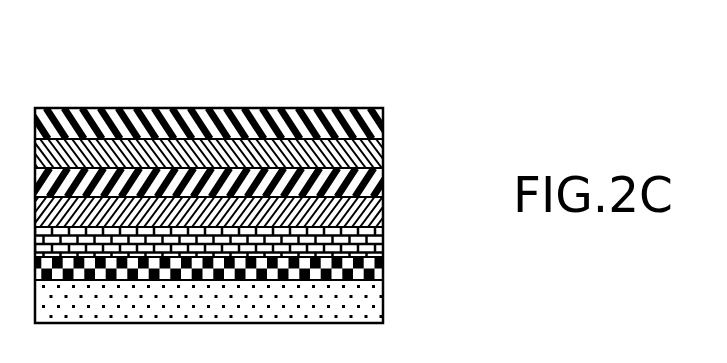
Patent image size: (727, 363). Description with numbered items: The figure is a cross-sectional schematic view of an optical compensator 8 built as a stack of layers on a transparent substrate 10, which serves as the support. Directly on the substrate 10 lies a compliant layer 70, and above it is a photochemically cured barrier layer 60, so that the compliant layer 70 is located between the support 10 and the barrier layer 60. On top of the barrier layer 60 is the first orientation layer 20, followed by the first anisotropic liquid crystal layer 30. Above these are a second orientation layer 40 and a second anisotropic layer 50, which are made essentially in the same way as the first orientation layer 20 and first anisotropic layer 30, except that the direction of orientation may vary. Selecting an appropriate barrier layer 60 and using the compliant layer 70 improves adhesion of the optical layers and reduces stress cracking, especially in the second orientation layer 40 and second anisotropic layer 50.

The optical compensator 8 is at (255, 92).
The substrate 10 is at (383, 305).
The compliant layer 70 is at (383, 277).
The photochemically cured barrier layer 60 is at (383, 250).
The orientation layer 20 is at (383, 218).
The anisotropic liquid crystal layer 30 is at (383, 188).
The second orientation layer 40 is at (383, 158).
The second anisotropic layer 50 is at (383, 127).